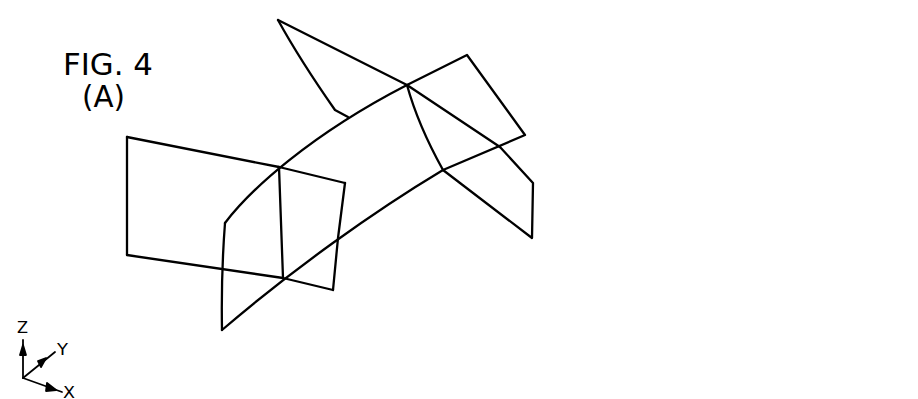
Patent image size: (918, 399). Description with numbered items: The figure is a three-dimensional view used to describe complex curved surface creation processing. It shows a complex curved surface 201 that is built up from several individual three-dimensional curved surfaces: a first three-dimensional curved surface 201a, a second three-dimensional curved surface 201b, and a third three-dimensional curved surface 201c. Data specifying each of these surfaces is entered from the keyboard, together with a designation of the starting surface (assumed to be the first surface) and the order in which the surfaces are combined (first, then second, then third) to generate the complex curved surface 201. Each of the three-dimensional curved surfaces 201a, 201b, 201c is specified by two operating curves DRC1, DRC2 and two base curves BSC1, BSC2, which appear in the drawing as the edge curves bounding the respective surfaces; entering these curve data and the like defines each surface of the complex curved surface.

The complex curved surface 201 is at (401, 198).
The first three-dimensional curved surface 201a is at (151, 260).
The second three-dimensional curved surface 201b is at (261, 297).
The third three-dimensional curved surface 201c is at (364, 61).
The base curve BSC1 is at (547, 139).
The base curve BSC2 is at (495, 208).
The operating curve DRC1 is at (214, 345).
The operating curve DRC2 is at (511, 112).